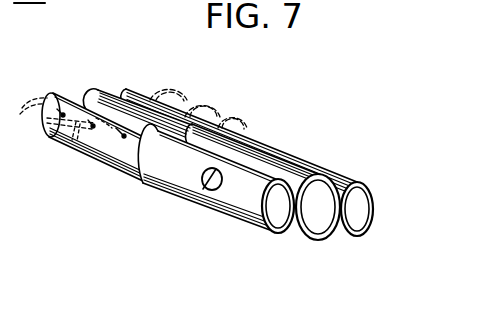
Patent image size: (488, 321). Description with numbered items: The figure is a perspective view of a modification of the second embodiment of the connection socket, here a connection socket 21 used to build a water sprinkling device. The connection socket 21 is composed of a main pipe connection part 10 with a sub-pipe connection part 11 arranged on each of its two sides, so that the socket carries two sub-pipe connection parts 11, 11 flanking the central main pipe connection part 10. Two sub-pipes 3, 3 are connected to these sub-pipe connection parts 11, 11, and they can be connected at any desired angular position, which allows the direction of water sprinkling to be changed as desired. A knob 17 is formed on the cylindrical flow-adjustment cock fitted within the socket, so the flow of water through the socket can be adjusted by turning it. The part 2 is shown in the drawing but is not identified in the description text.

The tubular member 2 is at (105, 100).
The sub-pipe 3 is at (143, 97).
The main pipe connection part 10 is at (283, 166).
The sub-pipe connection part 11 is at (252, 198).
The knob 17 is at (207, 188).
The connection socket 21 is at (260, 126).